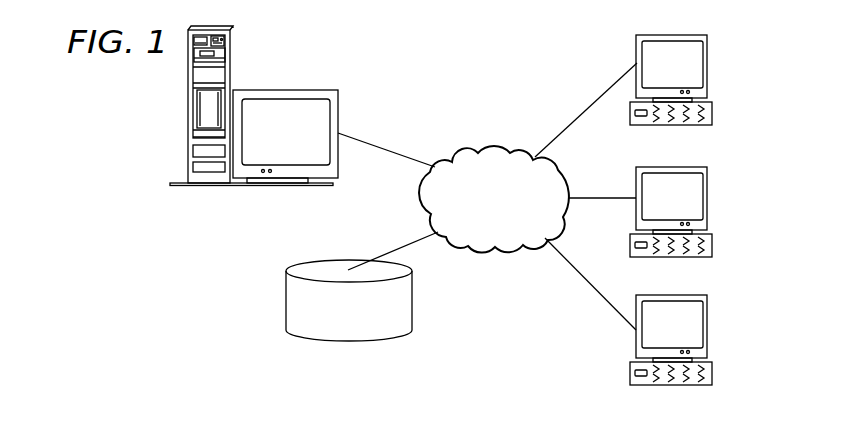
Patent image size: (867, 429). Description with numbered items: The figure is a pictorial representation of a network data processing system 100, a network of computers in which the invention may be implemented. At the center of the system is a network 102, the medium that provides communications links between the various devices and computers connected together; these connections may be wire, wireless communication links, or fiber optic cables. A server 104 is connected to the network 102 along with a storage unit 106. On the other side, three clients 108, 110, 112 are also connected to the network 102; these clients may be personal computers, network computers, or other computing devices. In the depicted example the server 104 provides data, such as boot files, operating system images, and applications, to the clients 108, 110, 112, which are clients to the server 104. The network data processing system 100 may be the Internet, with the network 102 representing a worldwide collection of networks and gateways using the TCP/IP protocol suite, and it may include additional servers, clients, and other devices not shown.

The network data processing system 100 is at (548, 84).
The network 102 is at (467, 148).
The server 104 is at (188, 105).
The storage unit 106 is at (286, 302).
The client 108 is at (710, 65).
The client 110 is at (710, 197).
The client 112 is at (710, 327).